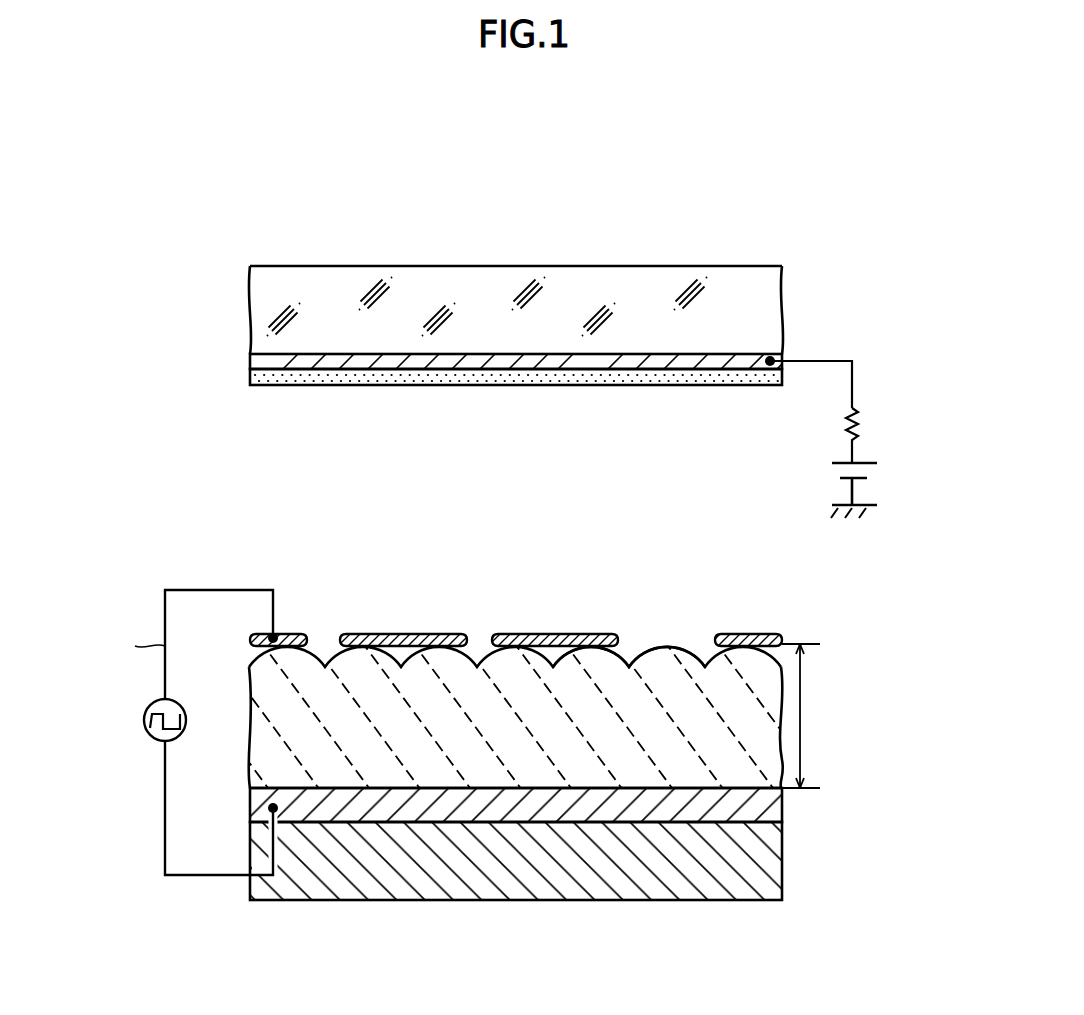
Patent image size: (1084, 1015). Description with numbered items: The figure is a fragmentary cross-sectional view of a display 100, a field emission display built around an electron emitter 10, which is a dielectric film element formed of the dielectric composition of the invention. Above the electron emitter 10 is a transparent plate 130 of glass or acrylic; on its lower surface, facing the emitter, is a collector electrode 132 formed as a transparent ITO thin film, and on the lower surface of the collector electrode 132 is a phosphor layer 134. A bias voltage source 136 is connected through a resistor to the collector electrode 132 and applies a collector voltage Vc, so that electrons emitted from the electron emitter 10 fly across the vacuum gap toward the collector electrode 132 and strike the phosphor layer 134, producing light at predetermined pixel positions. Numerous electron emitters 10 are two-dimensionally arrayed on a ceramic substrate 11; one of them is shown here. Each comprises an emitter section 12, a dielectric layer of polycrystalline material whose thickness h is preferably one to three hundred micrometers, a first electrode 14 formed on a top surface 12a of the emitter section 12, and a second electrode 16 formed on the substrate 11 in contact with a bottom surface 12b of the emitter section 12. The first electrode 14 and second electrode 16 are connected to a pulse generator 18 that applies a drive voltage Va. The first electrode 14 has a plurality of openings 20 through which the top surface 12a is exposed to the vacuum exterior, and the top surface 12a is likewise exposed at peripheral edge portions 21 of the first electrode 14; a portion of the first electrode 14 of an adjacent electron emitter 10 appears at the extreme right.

The display 100 is at (775, 192).
The transparent plate 130 is at (250, 318).
The collector electrode 132 is at (250, 360).
The phosphor layer 134 is at (250, 383).
The bias voltage source 136 is at (832, 464).
The electron emitter 10 is at (407, 557).
The ceramic substrate 11 is at (250, 897).
The emitter section 12 is at (250, 692).
The top surface 12a is at (490, 648).
The bottom surface 12b is at (250, 790).
The first electrode 14 is at (366, 634).
The second electrode 16 is at (250, 808).
The pulse generator 18 is at (144, 721).
The openings 20 is at (313, 617).
The peripheral edge portions 21 is at (628, 643).